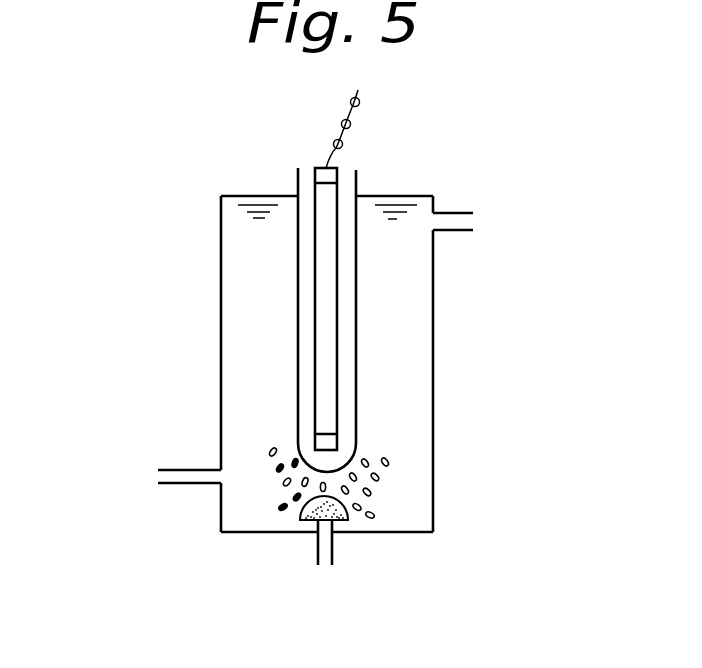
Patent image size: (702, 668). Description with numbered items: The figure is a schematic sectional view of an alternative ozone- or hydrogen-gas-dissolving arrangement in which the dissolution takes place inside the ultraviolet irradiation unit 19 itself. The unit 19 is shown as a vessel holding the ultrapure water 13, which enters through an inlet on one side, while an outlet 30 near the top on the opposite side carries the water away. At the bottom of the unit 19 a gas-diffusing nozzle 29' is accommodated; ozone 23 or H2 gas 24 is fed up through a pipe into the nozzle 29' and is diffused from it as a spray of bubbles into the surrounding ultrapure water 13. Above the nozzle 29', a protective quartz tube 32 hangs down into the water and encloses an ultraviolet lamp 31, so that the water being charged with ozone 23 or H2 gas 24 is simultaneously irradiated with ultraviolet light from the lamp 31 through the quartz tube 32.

The ultrapure water 13 is at (150, 475).
The ultraviolet irradiation unit 19 is at (435, 377).
The outlet 30 is at (482, 222).
The ultraviolet lamp 31 is at (339, 170).
The protective quartz tube 32 is at (298, 178).
The gas-diffusing nozzle 29' is at (347, 516).
The ozone 23 is at (331, 589).
The H2 gas 24 is at (325, 569).